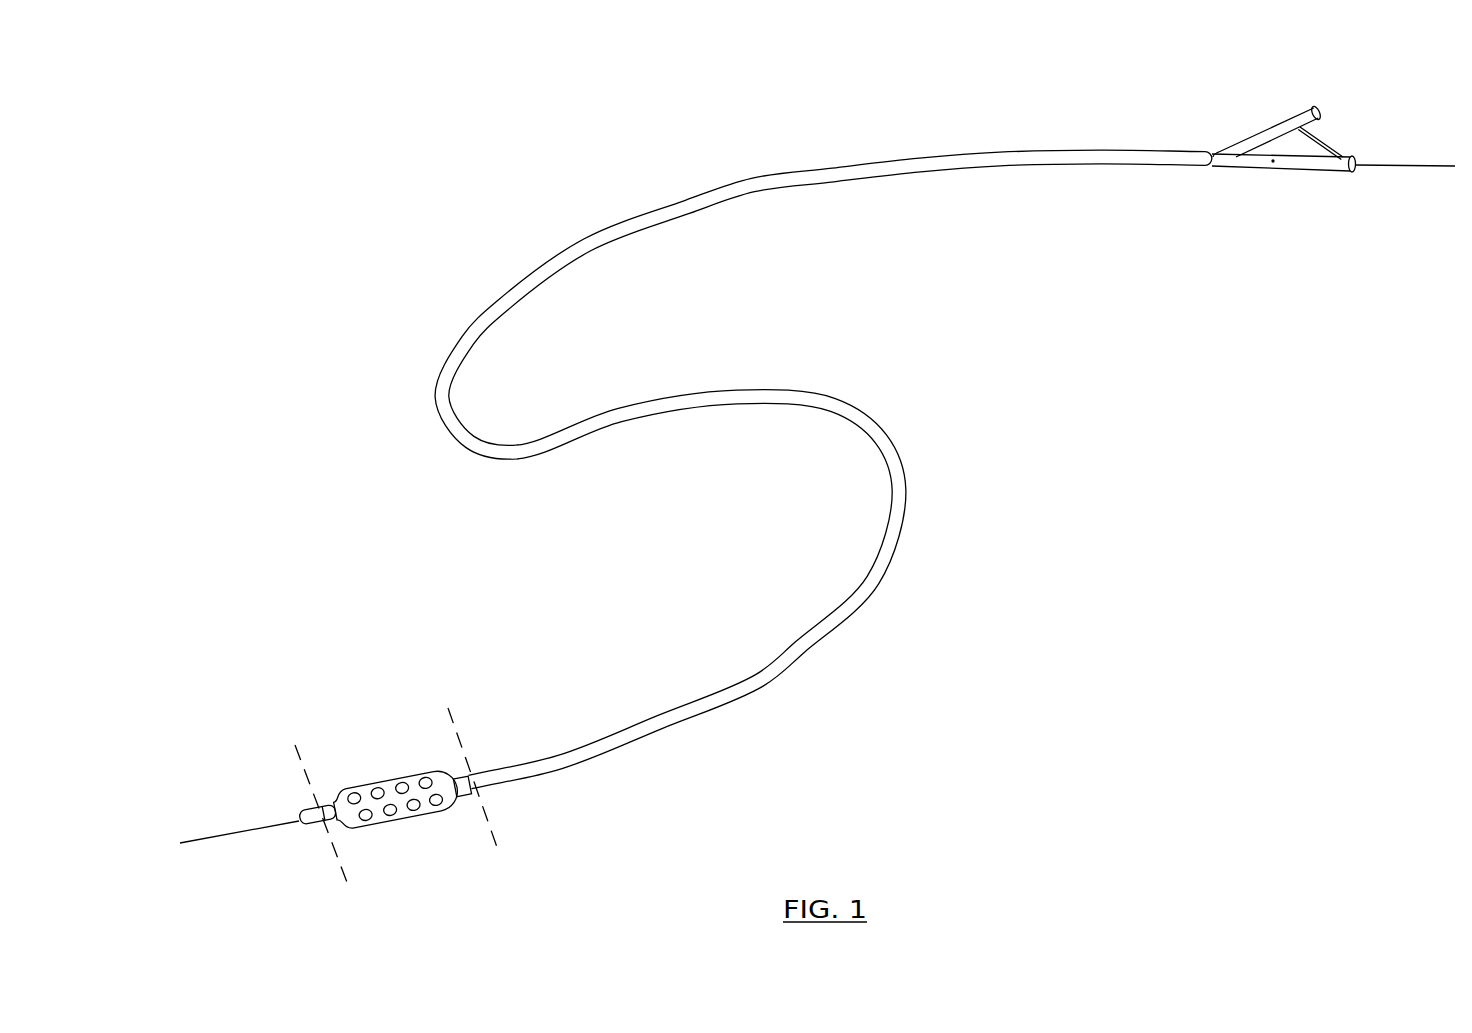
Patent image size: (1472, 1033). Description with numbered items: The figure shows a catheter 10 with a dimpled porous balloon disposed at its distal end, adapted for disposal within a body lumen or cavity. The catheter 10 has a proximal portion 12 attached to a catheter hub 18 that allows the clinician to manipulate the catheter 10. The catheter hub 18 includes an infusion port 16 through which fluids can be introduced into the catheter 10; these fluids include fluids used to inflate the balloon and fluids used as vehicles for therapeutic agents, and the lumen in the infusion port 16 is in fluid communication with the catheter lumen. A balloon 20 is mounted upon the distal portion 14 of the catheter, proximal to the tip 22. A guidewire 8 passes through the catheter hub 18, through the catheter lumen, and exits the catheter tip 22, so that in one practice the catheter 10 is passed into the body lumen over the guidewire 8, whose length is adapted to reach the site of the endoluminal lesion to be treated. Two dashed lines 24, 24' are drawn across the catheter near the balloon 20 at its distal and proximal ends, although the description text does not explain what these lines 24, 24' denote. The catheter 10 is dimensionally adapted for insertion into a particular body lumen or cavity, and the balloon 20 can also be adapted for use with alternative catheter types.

The guidewire 8 is at (1415, 173).
The catheter 10 is at (343, 247).
The proximal portion 12 is at (772, 198).
The distal portion 14 is at (540, 775).
The infusion port 16 is at (1290, 110).
The catheter hub 18 is at (1296, 172).
The balloon 20 is at (412, 830).
The tip 22 is at (302, 830).
The distal balloon boundary line 24 is at (315, 797).
The proximal balloon boundary line 24' is at (464, 762).